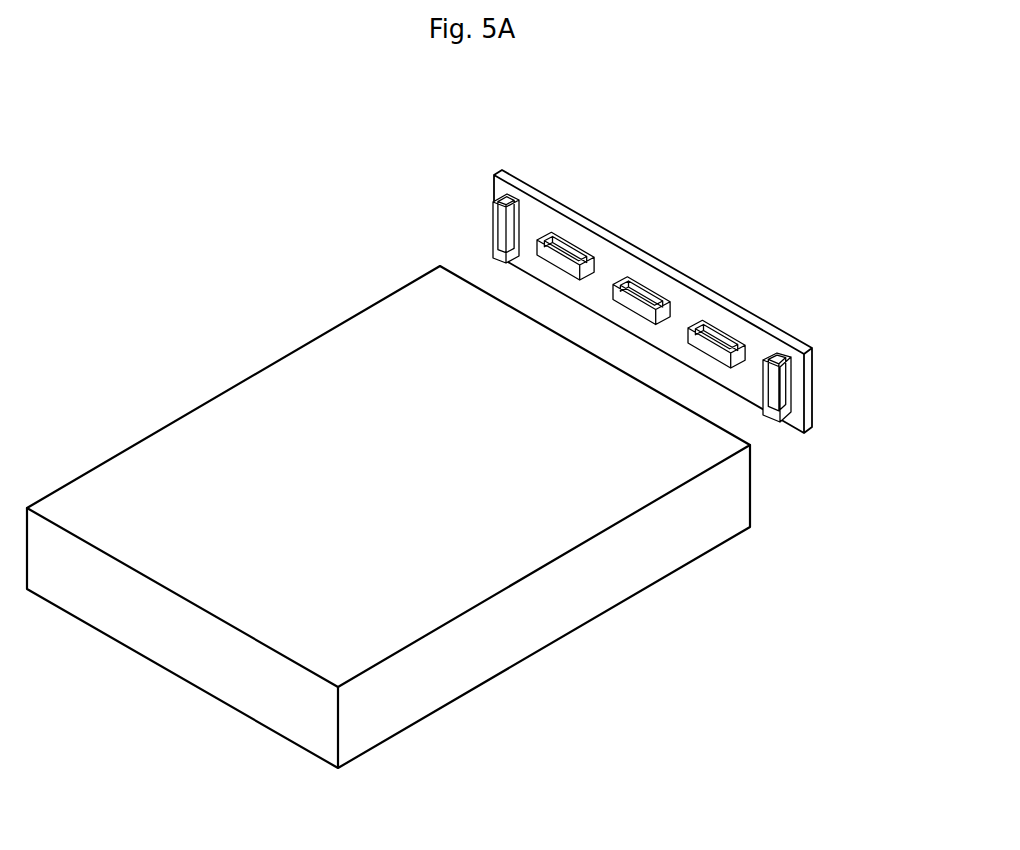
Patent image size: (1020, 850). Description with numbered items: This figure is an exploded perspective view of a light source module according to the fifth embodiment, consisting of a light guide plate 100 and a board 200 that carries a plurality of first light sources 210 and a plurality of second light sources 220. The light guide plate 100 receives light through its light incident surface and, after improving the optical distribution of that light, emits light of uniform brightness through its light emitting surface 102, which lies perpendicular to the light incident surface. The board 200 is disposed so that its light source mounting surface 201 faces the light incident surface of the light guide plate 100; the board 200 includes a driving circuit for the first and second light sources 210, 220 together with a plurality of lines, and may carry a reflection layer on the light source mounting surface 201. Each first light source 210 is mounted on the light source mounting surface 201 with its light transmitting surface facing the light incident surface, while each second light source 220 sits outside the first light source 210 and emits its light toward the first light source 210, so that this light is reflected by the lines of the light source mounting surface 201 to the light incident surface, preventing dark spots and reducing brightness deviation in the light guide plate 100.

The light guide plate 100 is at (388, 517).
The light emitting surface 102 is at (348, 330).
The board 200 is at (701, 277).
The light source mounting surface 201 is at (799, 359).
The first light source 210 is at (575, 238).
The second light source 220 is at (517, 192).